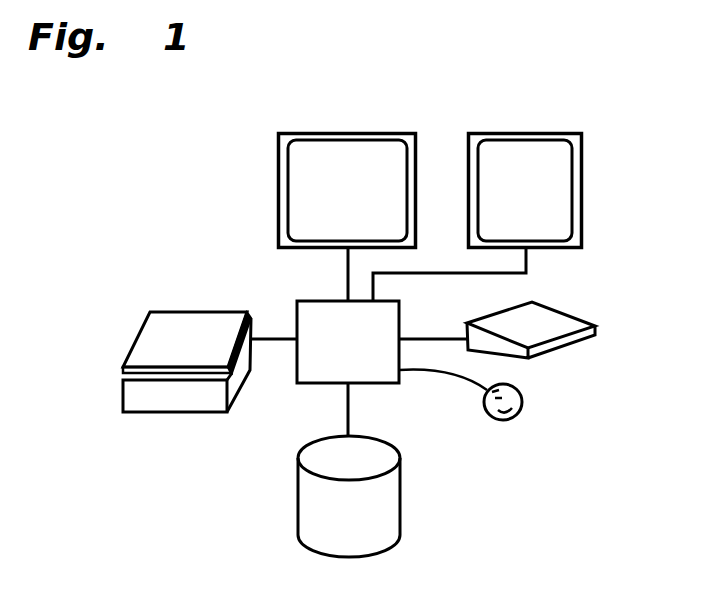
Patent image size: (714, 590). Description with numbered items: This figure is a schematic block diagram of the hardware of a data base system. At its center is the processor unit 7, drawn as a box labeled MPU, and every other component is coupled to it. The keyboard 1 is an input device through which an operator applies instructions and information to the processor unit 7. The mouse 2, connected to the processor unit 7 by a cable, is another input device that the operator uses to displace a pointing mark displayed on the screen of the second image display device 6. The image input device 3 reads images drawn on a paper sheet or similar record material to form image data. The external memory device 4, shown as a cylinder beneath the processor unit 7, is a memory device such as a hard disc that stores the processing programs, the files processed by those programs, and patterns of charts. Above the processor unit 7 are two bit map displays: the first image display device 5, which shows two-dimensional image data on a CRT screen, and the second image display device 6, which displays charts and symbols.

The keyboard 1 is at (557, 318).
The mouse 2 is at (522, 400).
The image input device 3 is at (166, 320).
The external memory device 4 is at (388, 510).
The first image display device 5 is at (365, 148).
The second image display device 6 is at (521, 150).
The processor unit 7 is at (297, 379).